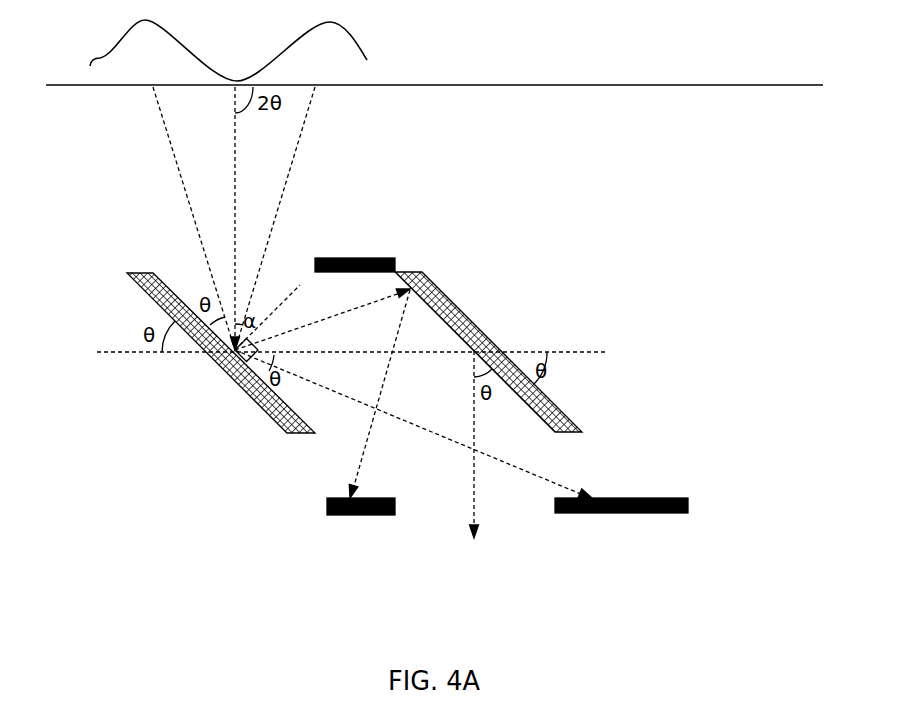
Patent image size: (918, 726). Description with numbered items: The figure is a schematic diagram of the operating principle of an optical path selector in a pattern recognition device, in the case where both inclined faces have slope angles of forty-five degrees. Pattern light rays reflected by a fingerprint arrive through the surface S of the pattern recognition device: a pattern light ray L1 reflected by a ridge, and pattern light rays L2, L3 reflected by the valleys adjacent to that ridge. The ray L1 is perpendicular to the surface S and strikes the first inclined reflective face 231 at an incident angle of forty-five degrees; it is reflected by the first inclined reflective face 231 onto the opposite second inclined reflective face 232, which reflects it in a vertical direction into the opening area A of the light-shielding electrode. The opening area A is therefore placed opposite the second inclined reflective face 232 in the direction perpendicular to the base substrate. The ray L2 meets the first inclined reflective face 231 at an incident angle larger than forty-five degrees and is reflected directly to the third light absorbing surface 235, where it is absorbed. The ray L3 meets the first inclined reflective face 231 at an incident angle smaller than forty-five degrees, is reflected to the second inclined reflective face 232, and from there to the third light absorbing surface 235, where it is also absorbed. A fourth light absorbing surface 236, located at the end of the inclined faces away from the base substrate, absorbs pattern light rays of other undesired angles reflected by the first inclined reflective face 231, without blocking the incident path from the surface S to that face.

The first inclined reflective face 231 is at (235, 381).
The second inclined reflective face 232 is at (465, 317).
The third light absorbing surface 235 is at (630, 512).
The fourth light absorbing surface 236 is at (347, 258).
The surface of the pattern recognition device S is at (743, 85).
The opening area A is at (463, 505).
The pattern light ray L1 is at (247, 218).
The pattern light ray L2 is at (186, 218).
The pattern light ray L3 is at (287, 218).